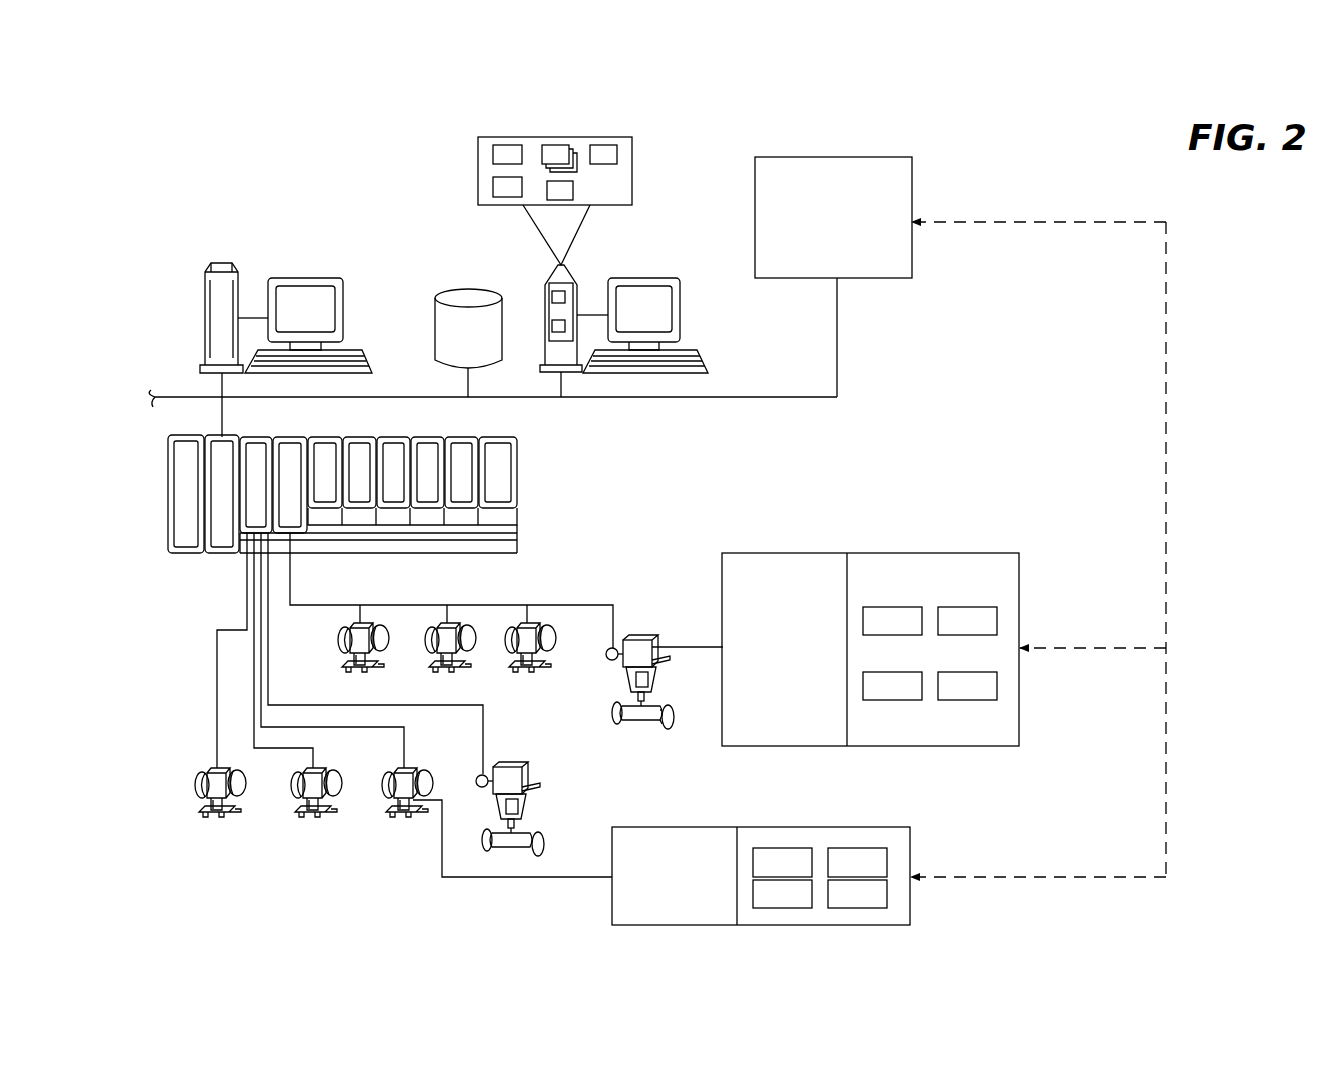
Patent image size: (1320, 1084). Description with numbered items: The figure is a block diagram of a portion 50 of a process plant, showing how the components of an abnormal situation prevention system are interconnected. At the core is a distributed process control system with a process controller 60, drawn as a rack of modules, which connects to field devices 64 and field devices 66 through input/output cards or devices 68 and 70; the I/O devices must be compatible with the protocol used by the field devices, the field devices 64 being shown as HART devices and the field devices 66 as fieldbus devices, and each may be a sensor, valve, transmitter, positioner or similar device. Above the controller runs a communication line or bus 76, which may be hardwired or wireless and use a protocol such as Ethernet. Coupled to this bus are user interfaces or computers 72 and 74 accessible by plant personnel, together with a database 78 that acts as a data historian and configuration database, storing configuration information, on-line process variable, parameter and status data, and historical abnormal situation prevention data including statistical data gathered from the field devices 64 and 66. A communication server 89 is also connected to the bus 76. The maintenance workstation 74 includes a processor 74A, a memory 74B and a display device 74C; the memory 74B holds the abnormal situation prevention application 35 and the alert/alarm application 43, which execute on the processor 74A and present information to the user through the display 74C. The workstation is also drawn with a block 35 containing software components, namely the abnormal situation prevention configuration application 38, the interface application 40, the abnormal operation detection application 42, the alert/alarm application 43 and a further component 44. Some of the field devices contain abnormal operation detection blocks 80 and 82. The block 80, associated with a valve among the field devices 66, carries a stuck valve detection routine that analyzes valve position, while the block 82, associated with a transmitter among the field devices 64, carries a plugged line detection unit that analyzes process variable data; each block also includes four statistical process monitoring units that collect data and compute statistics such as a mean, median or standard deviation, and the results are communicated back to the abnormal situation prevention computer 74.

The portion of the process plant 50 is at (400, 118).
The abnormal situation prevention application 35 is at (452, 170).
The abnormal situation prevention configuration application 38 is at (505, 152).
The interface application 40 is at (553, 152).
The abnormal operation detection application 42 is at (608, 152).
The alert/alarm application 43 is at (565, 189).
The abnormal situation prevention application 44 is at (500, 188).
The user interface or computer 72 is at (280, 253).
The maintenance workstation 74 is at (602, 262).
The processor 74A is at (554, 327).
The memory 74B is at (555, 296).
The display device 74C is at (683, 305).
The communication line or bus 76 is at (734, 398).
The database 78 is at (434, 303).
The communication server 89 is at (914, 183).
The process controller 60 is at (342, 479).
The input/output card or device 68 is at (256, 455).
The input/output card or device 70 is at (290, 451).
The field devices 66 is at (366, 622).
The field devices 64 is at (210, 805).
The abnormal operation detection block 80 is at (912, 553).
The abnormal operation detection block 82 is at (795, 827).